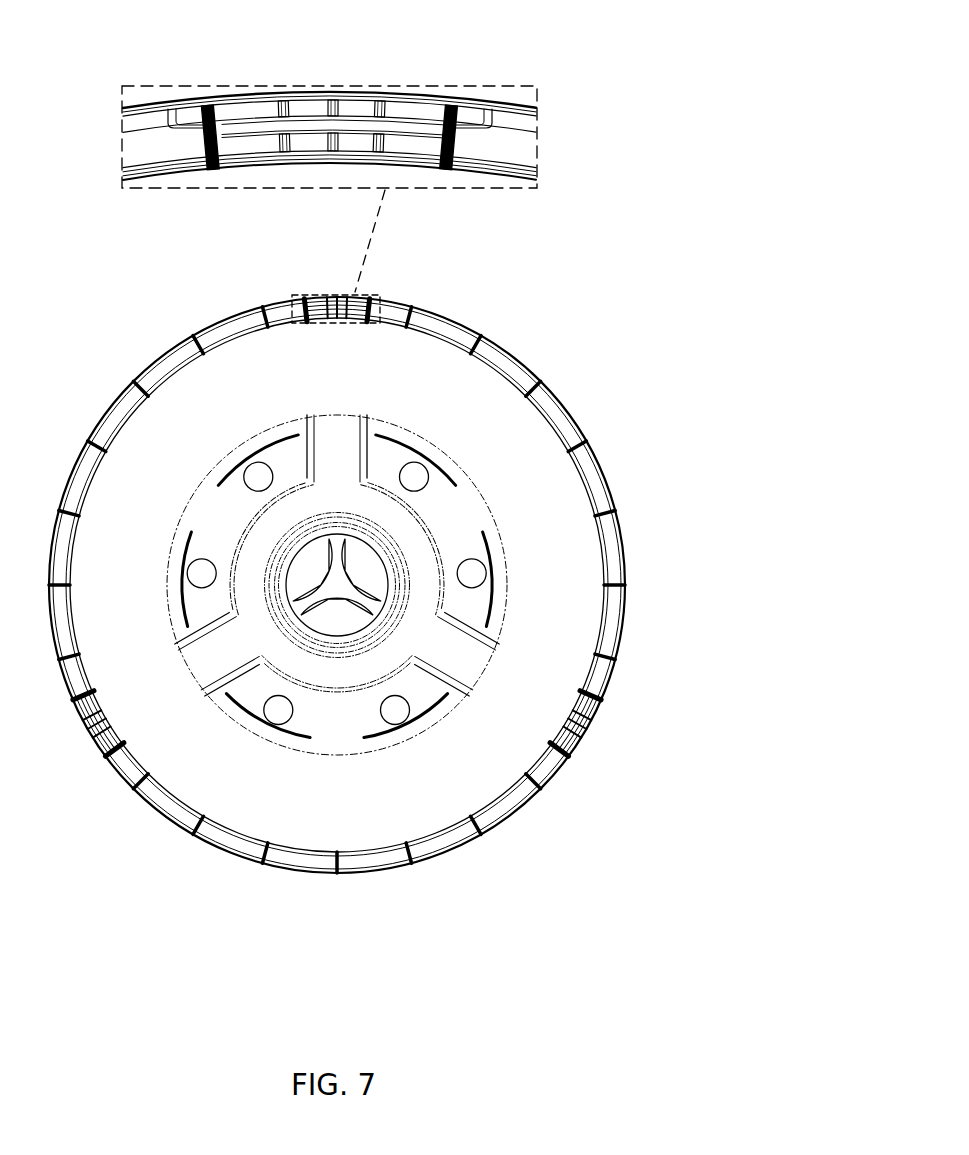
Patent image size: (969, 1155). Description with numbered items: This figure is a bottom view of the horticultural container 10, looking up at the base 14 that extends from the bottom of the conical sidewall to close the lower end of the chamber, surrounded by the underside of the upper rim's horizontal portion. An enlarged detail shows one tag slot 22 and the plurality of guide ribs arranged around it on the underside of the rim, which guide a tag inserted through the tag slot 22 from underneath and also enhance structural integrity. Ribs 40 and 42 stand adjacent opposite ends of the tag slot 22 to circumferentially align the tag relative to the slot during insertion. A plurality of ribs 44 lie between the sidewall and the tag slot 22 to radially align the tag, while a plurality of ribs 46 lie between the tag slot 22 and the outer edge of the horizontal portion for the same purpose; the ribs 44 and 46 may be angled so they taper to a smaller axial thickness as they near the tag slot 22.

The horticultural container 10 is at (737, 110).
The base 14 is at (558, 558).
The tag slot 22 is at (401, 129).
The rib 40 is at (208, 147).
The rib 42 is at (456, 131).
The ribs 44 is at (325, 153).
The ribs 46 is at (338, 110).